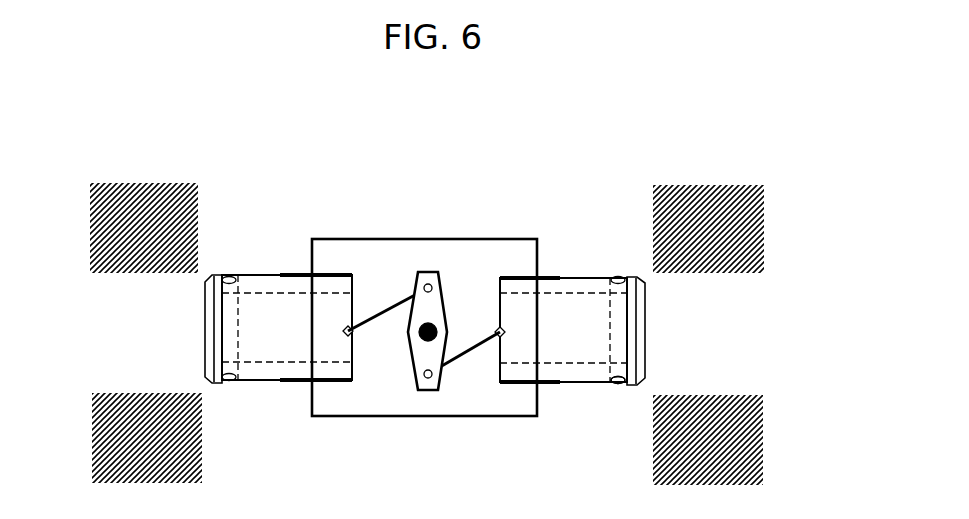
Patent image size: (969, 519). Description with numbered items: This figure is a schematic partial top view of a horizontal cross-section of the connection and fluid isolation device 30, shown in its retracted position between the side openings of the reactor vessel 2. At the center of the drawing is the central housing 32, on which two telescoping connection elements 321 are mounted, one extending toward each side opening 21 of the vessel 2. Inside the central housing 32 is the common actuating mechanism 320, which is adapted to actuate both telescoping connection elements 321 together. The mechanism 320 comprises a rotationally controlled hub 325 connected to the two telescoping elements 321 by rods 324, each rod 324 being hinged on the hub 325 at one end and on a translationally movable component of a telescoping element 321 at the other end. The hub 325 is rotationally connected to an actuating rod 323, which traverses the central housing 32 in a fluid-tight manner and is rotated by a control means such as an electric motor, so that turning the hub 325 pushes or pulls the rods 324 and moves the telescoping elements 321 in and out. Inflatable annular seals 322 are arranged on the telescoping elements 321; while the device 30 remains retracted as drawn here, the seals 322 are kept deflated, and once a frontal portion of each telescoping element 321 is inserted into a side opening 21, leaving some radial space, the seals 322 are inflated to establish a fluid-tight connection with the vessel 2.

The vessel 2 is at (148, 172).
The side opening 21 is at (148, 343).
The connection and fluid isolation device 30 is at (325, 212).
The central housing 32 is at (457, 239).
The common actuating mechanism 320 is at (400, 268).
The telescoping connection element 321 is at (274, 312).
The inflatable annular seal 322 is at (615, 385).
The actuating rod 323 is at (418, 340).
The rod 324 is at (472, 350).
The rotationally controlled hub 325 is at (443, 300).